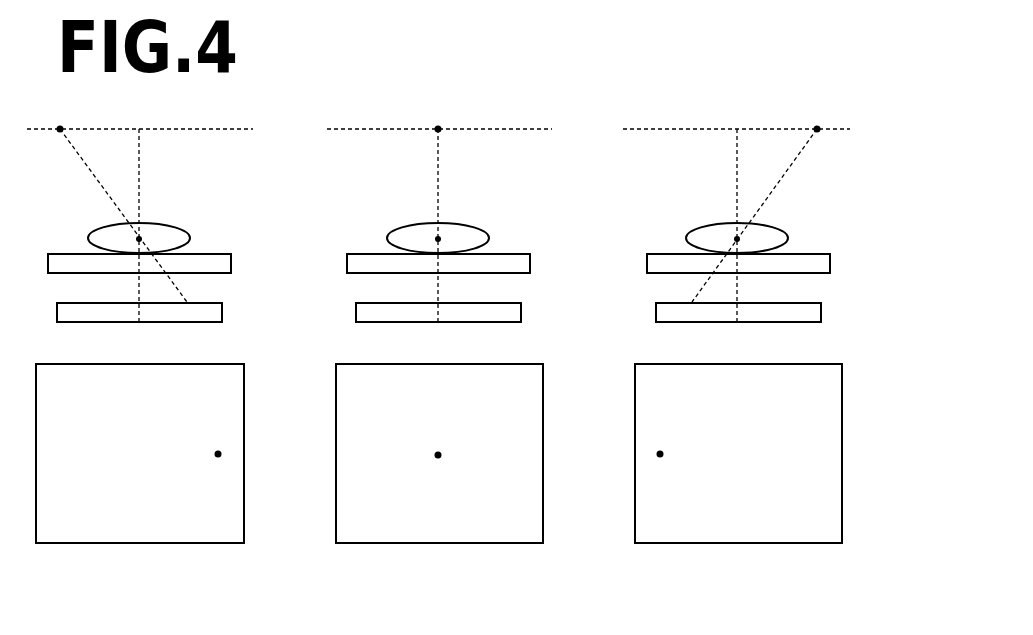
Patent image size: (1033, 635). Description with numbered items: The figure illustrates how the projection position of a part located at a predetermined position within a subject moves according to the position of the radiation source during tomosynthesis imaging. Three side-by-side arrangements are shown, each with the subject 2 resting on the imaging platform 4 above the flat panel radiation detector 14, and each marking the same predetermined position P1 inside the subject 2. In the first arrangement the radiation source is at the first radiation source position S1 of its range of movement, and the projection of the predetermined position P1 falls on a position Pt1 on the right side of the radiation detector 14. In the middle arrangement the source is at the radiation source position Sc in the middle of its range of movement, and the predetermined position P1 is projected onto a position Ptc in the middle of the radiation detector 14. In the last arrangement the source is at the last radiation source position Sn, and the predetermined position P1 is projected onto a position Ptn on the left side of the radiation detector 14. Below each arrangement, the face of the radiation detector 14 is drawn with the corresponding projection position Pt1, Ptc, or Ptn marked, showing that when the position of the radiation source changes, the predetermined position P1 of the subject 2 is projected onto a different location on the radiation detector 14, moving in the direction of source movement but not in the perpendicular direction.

The subject 2 is at (182, 228).
The imaging platform 4 is at (231, 262).
The radiation detector 14 is at (222, 312).
The predetermined position P1 is at (139, 239).
The first radiation source position S1 is at (60, 115).
The middle radiation source position Sc is at (438, 115).
The last radiation source position Sn is at (816, 115).
The projection position Pt1 is at (222, 454).
The projection position Ptc is at (442, 454).
The projection position Ptn is at (660, 458).